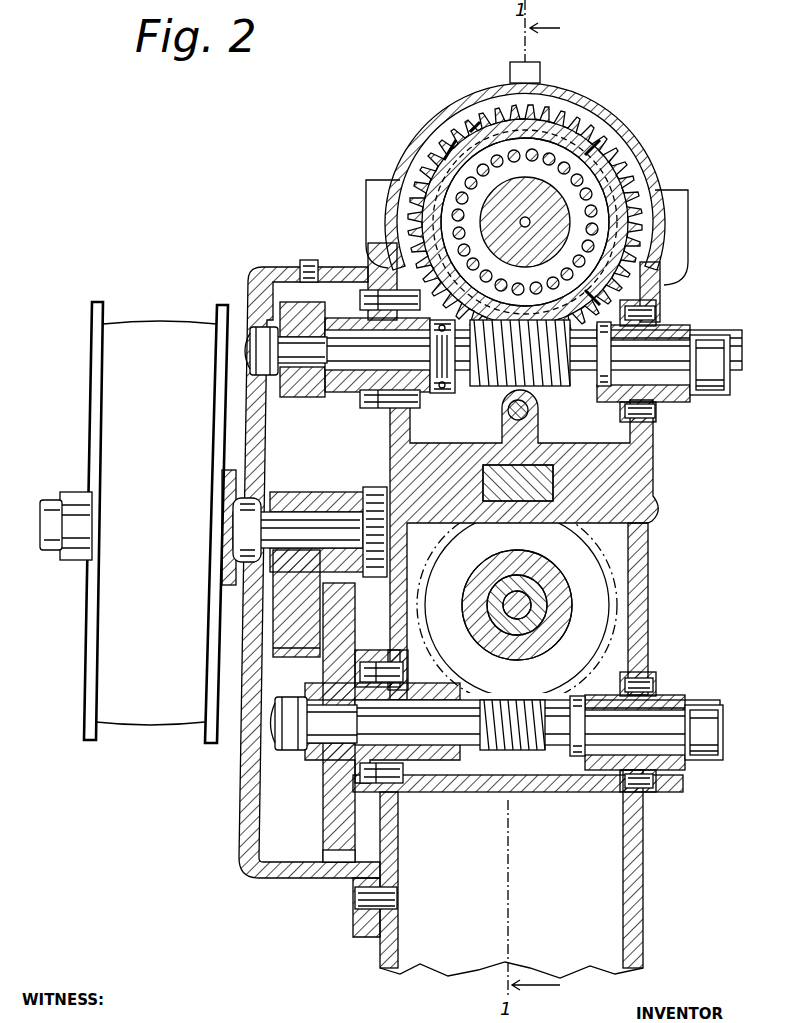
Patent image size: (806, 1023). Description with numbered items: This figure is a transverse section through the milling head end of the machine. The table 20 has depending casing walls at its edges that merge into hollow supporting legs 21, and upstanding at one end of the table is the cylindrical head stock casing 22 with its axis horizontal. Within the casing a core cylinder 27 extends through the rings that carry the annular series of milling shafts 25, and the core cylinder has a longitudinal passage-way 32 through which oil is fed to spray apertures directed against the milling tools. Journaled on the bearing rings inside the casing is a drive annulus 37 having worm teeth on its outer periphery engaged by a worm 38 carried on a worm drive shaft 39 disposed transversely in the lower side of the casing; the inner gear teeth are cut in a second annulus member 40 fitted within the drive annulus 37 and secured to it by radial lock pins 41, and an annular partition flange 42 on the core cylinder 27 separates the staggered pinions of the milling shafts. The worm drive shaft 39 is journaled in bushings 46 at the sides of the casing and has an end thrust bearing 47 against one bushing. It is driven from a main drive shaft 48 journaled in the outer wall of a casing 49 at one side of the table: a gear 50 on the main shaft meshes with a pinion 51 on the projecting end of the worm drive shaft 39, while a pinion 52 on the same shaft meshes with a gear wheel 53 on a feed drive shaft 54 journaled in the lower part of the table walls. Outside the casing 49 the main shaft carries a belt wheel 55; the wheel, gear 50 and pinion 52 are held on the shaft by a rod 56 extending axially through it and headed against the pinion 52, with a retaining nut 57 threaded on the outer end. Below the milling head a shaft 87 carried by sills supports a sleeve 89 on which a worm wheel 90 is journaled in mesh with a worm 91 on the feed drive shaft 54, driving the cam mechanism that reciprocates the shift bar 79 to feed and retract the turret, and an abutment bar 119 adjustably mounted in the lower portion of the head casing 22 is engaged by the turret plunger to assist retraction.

The table 20 is at (656, 498).
The supporting legs 21 is at (645, 938).
The head stock casing 22 is at (537, 78).
The milling shaft 25 is at (606, 256).
The core cylinder 27 is at (422, 200).
The longitudinal passage-way 32 is at (530, 222).
The drive annulus 37 is at (610, 160).
The worm 38 is at (550, 392).
The worm drive shaft 39 is at (660, 356).
The second annulus member 40 is at (600, 200).
The radial lock pins 41 is at (592, 140).
The annular partition flange 42 is at (440, 195).
The bushings 46 is at (680, 396).
The end thrust bearing 47 is at (426, 386).
The main drive shaft 48 is at (245, 516).
The casing 49 is at (250, 762).
The gear 50 is at (285, 622).
The pinion 51 is at (306, 304).
The pinion 52 is at (340, 480).
The gear wheel 53 is at (338, 780).
The feed drive shaft 54 is at (440, 776).
The belt wheel 55 is at (115, 686).
The rod 56 is at (40, 522).
The retaining nut 57 is at (72, 548).
The shift bar 79 is at (530, 486).
The shaft 87 is at (536, 594).
The sleeve 89 is at (535, 616).
The worm wheel 90 is at (492, 700).
The worm 91 is at (495, 750).
The abutment bar 119 is at (512, 412).